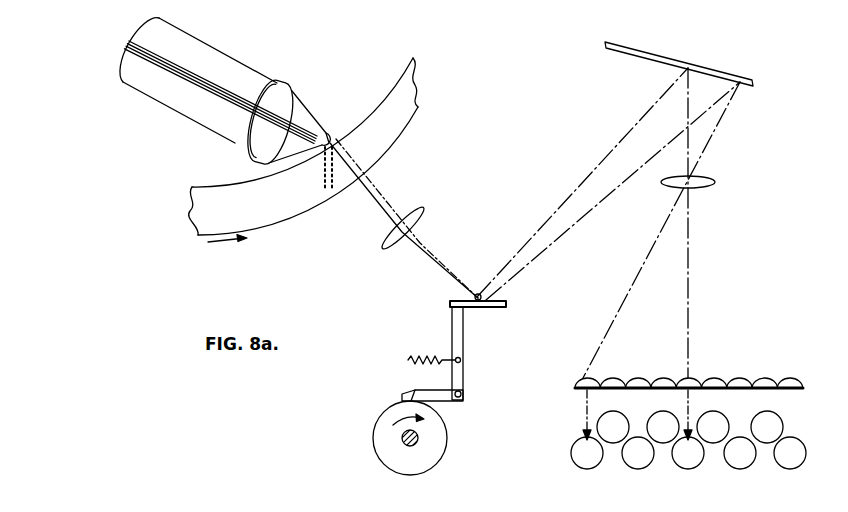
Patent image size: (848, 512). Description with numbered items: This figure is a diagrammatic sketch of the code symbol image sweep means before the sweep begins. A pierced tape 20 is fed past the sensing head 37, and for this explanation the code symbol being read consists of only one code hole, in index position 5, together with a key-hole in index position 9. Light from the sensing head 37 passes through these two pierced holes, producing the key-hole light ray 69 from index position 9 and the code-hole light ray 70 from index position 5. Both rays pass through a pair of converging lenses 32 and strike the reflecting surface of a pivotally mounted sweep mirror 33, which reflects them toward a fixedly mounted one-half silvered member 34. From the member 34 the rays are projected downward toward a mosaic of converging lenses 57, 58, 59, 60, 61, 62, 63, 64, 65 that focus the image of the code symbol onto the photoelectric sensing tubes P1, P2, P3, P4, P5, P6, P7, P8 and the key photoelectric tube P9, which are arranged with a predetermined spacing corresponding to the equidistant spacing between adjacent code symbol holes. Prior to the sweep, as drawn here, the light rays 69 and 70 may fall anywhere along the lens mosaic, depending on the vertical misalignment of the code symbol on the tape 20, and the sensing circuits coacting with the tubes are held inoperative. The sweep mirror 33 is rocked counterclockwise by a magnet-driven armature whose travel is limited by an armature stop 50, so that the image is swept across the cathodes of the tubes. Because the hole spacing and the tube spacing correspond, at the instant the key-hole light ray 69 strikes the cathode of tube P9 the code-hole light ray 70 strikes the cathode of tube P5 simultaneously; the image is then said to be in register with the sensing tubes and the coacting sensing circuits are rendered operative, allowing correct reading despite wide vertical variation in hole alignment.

The index position 5 is at (333, 167).
The index position 9 is at (333, 143).
The tape 20 is at (243, 181).
The converging lenses 32 is at (425, 211).
The sweep mirror 33 is at (506, 304).
The one-half silvered member 34 is at (740, 81).
The sensing head 37 is at (333, 136).
The armature stop 50 is at (708, 183).
The converging lens 57 is at (584, 378).
The converging lens 58 is at (608, 377).
The converging lens 59 is at (637, 376).
The converging lens 60 is at (661, 377).
The converging lens 61 is at (694, 376).
The converging lens 62 is at (716, 377).
The converging lens 63 is at (741, 376).
The converging lens 64 is at (767, 377).
The converging lens 65 is at (792, 376).
The key-hole light ray 69 is at (375, 185).
The code-hole light ray 70 is at (369, 196).
The photoelectric sensing tube P1 is at (578, 468).
The photoelectric sensing tube P2 is at (609, 415).
The photoelectric sensing tube P3 is at (637, 469).
The photoelectric sensing tube P4 is at (660, 413).
The photoelectric sensing tube P5 is at (688, 469).
The photoelectric sensing tube P6 is at (716, 413).
The photoelectric sensing tube P7 is at (740, 469).
The photoelectric sensing tube P8 is at (774, 412).
The key photoelectric tube P9 is at (790, 469).